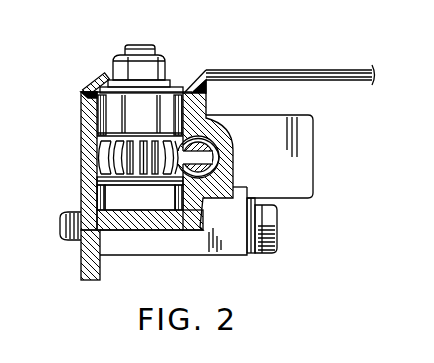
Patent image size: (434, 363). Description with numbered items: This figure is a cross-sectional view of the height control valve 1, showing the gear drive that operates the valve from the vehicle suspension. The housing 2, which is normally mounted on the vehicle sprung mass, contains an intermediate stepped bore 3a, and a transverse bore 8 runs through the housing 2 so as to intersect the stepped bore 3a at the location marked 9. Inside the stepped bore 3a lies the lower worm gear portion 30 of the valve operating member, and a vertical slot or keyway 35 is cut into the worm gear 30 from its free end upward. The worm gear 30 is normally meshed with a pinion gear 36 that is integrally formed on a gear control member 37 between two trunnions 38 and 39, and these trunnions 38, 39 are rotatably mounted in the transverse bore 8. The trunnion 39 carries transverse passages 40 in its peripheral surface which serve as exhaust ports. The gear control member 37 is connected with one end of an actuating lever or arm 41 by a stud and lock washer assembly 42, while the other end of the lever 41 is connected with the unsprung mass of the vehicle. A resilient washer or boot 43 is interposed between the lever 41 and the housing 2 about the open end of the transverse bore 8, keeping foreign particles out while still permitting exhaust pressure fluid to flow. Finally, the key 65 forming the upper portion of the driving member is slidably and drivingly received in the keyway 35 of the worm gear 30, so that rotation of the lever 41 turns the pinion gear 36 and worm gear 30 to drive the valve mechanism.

The height control valve 1 is at (79, 292).
The housing 2 is at (88, 258).
The stepped bore 3a is at (233, 178).
The transverse bore 8 is at (105, 198).
The intersection 9 is at (200, 197).
The worm gear portion 30 is at (214, 132).
The vertical slot or keyway 35 is at (214, 156).
The pinion gear 36 is at (103, 155).
The gear control member 37 is at (147, 207).
The trunnion 38 is at (108, 190).
The trunnion 39 is at (107, 116).
The transverse passages 40 is at (157, 110).
The actuating lever or arm 41 is at (333, 71).
The stud and lock washer assembly 42 is at (130, 113).
The resilient washer or boot 43 is at (92, 88).
The key 65 is at (222, 143).